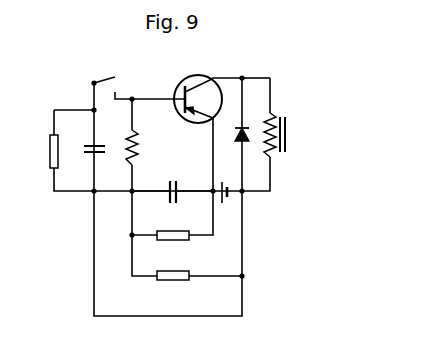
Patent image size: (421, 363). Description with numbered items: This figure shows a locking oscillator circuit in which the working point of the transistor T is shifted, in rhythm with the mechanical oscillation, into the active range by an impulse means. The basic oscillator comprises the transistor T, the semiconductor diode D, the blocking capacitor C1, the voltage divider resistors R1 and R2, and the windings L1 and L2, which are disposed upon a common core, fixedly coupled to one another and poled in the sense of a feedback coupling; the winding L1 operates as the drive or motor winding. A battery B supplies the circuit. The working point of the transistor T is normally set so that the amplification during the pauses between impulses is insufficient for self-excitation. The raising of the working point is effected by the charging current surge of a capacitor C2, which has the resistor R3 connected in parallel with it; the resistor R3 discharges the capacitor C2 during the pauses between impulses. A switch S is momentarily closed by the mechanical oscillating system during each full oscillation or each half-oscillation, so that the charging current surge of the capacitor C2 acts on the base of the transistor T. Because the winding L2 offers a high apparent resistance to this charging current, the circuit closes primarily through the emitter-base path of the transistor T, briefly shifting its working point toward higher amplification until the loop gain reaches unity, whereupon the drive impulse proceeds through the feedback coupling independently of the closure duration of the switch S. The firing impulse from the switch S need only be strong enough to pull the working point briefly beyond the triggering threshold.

The switch S is at (104, 74).
The transistor T is at (182, 81).
The semiconductor diode D is at (240, 126).
The winding L1 is at (284, 135).
The winding L2 is at (141, 147).
The blocking capacitor C1 is at (172, 184).
The capacitor C2 is at (89, 140).
The voltage divider resistor R1 is at (173, 269).
The voltage divider resistor R2 is at (173, 228).
The resistor R3 is at (43, 151).
The battery B is at (224, 183).